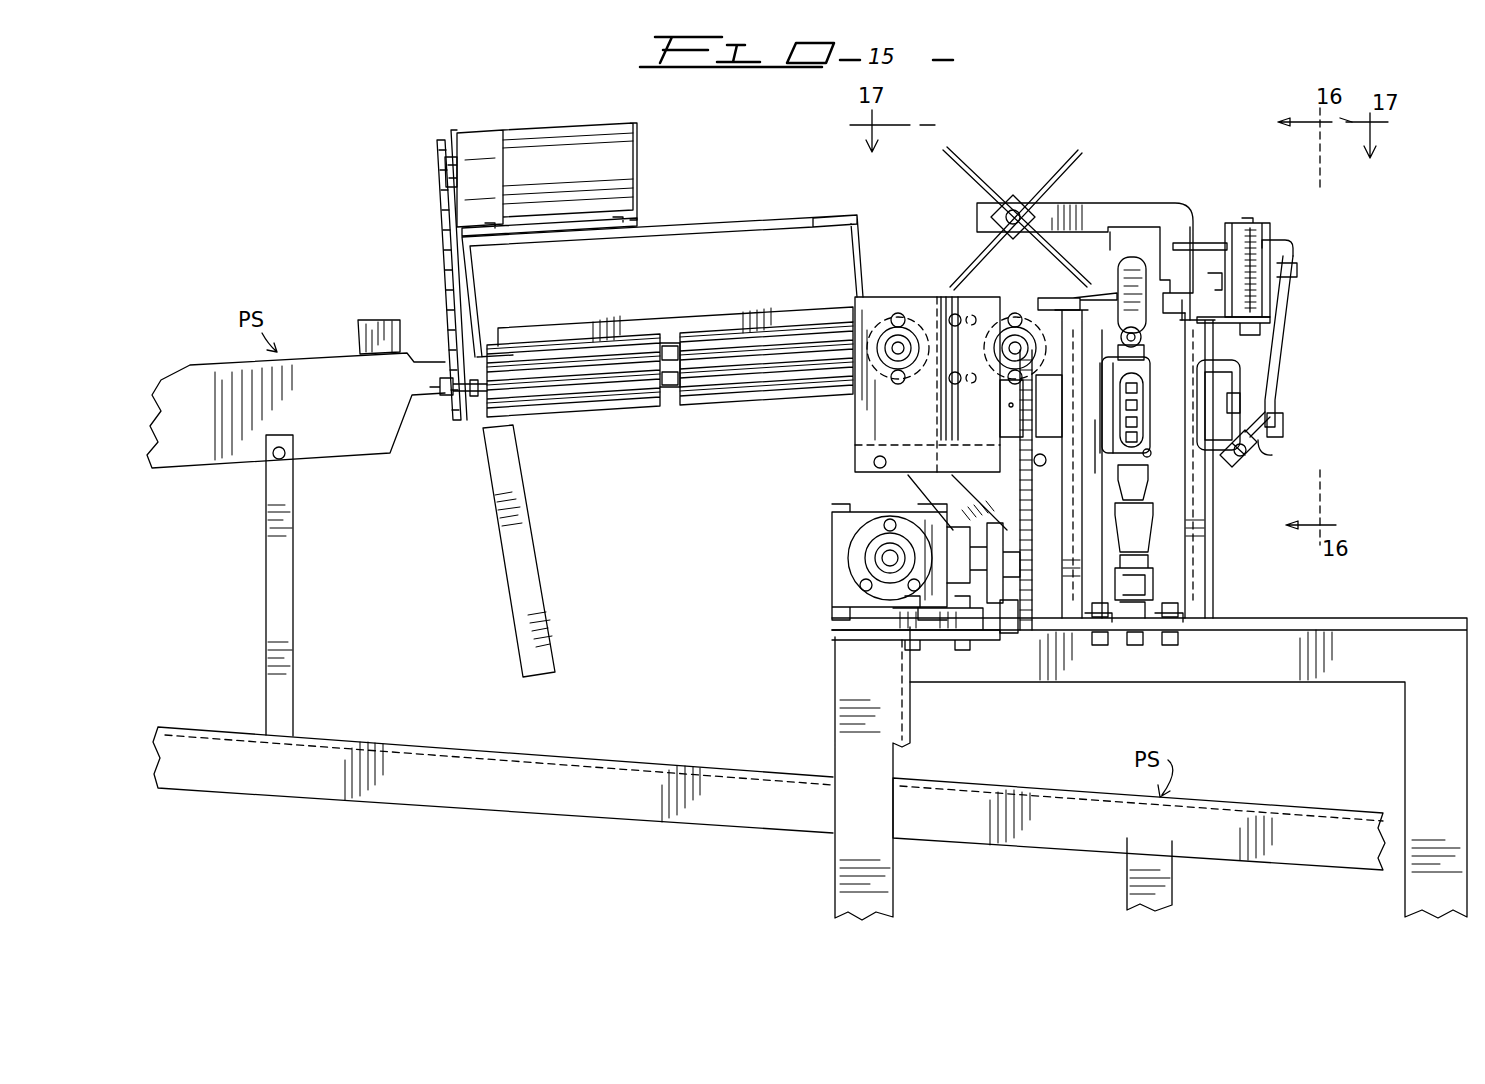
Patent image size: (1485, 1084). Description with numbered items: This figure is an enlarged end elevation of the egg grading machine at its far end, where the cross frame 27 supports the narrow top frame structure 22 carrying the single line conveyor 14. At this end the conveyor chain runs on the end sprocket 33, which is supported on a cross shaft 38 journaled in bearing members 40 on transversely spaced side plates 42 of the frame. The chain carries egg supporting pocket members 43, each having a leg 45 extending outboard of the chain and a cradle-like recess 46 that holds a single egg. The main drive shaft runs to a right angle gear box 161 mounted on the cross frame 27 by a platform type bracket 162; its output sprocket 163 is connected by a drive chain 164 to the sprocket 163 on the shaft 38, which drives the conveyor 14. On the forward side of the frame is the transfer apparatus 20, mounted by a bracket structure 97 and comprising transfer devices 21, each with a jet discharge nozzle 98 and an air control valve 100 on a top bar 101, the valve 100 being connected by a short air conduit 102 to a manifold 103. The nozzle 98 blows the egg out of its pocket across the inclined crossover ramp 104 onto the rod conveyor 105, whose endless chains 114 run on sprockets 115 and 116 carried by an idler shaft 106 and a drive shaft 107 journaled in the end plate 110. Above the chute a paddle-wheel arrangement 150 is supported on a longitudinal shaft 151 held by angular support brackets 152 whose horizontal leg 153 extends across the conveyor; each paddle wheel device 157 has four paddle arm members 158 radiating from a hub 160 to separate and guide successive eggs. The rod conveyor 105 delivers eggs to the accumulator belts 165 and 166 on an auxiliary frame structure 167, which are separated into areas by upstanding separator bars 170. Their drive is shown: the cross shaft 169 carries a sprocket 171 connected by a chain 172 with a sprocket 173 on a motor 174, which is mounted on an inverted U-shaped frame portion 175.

The single line conveyor 14 is at (1168, 240).
The transfer apparatus 20 is at (1272, 216).
The transfer device 21 is at (1280, 240).
The top frame structure 22 is at (1200, 524).
The cross frame 27 is at (835, 724).
The end sprocket 33 is at (1140, 430).
The cross shaft 38 is at (1134, 532).
The bearing member 40 is at (1240, 385).
The side plate 42 is at (1070, 444).
The egg supporting pocket member 43 is at (1124, 328).
The leg 45 is at (1140, 270).
The cradle-like recess 46 is at (1142, 398).
The bracket structure 97 is at (1238, 324).
The jet discharge nozzle 98 is at (1196, 242).
The air control valve 100 is at (1224, 289).
The top bar 101 is at (1240, 222).
The air conduit 102 is at (1276, 326).
The manifold 103 is at (1256, 452).
The crossover ramp 104 is at (1070, 300).
The rod conveyor 105 is at (912, 300).
The idler shaft 106 is at (1013, 346).
The drive shaft 107 is at (896, 346).
The end plate 110 is at (856, 428).
The endless chain 114 is at (922, 300).
The sprocket 115 is at (985, 340).
The sprocket 116 is at (918, 396).
The paddle-wheel arrangement 150 is at (1026, 174).
The longitudinal shaft 151 is at (1004, 216).
The support bracket 152 is at (1100, 204).
The horizontal leg 153 is at (1055, 222).
The paddle wheel device 157 is at (956, 190).
The paddle arm member 158 is at (995, 190).
The hub 160 is at (1046, 240).
The right angle gear box 161 is at (832, 568).
The platform type bracket 162 is at (866, 637).
The sprocket 163 is at (1000, 394).
The drive chain 164 is at (1018, 462).
The accumulator belt 165 is at (733, 402).
The accumulator belt 166 is at (586, 412).
The auxiliary frame structure 167 is at (530, 577).
The cross shaft 169 is at (668, 392).
The separator bar 170 is at (652, 326).
The sprocket 171 is at (445, 403).
The chain 172 is at (450, 298).
The sprocket 173 is at (448, 180).
The motor 174 is at (541, 148).
The inverted U-shaped frame portion 175 is at (693, 227).